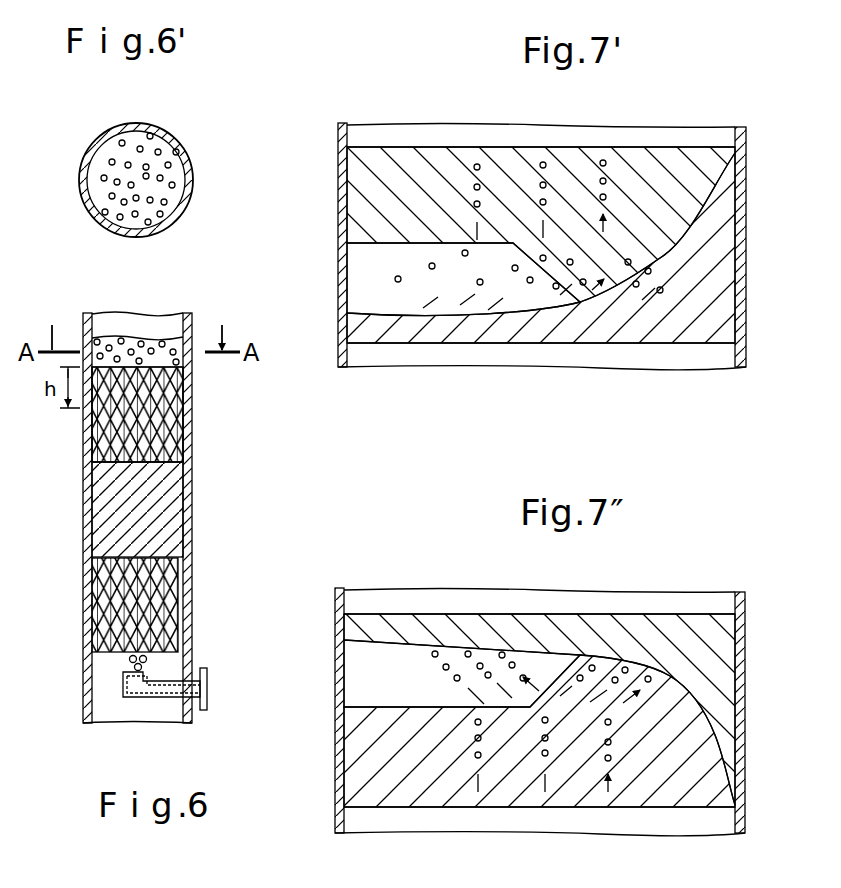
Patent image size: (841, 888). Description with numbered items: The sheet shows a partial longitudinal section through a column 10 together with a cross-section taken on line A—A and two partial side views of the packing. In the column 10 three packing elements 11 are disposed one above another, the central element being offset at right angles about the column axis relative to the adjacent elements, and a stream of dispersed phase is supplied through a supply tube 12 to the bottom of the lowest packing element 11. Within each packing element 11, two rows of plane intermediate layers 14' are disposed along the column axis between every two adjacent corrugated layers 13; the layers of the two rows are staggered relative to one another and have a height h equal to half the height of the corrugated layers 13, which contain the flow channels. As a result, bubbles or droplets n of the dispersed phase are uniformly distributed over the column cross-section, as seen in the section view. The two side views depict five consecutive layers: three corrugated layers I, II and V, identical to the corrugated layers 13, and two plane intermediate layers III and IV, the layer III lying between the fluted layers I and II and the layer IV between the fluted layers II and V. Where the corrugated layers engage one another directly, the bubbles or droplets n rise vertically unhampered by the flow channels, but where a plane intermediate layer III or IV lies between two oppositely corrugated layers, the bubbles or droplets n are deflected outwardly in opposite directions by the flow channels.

In FIG. 6', the column 10 is at (190, 175).
In FIG. 6, the column 10 is at (190, 522).
In FIG. 7', the column 10 is at (745, 206).
The column 10 is at (745, 707).
In FIG. 6, the packing element 11 is at (102, 508).
In FIG. 6, the supply tube 12 is at (193, 700).
In FIG. 6, the corrugated layer 13 is at (170, 602).
In FIG. 6, the plane intermediate layer 14' is at (165, 414).
In FIG. 6', the bubbles or droplets n is at (178, 157).
In FIG. 7', the bubbles or droplets n is at (543, 160).
The bubbles or droplets n is at (468, 650).
In FIG. 7', the corrugated layer I is at (724, 232).
In FIG. 7', the corrugated layer II is at (670, 165).
The corrugated layer II is at (686, 630).
In FIG. 7', the plane intermediate layer III is at (372, 272).
The plane intermediate layer IV is at (360, 664).
The corrugated layer V is at (362, 740).